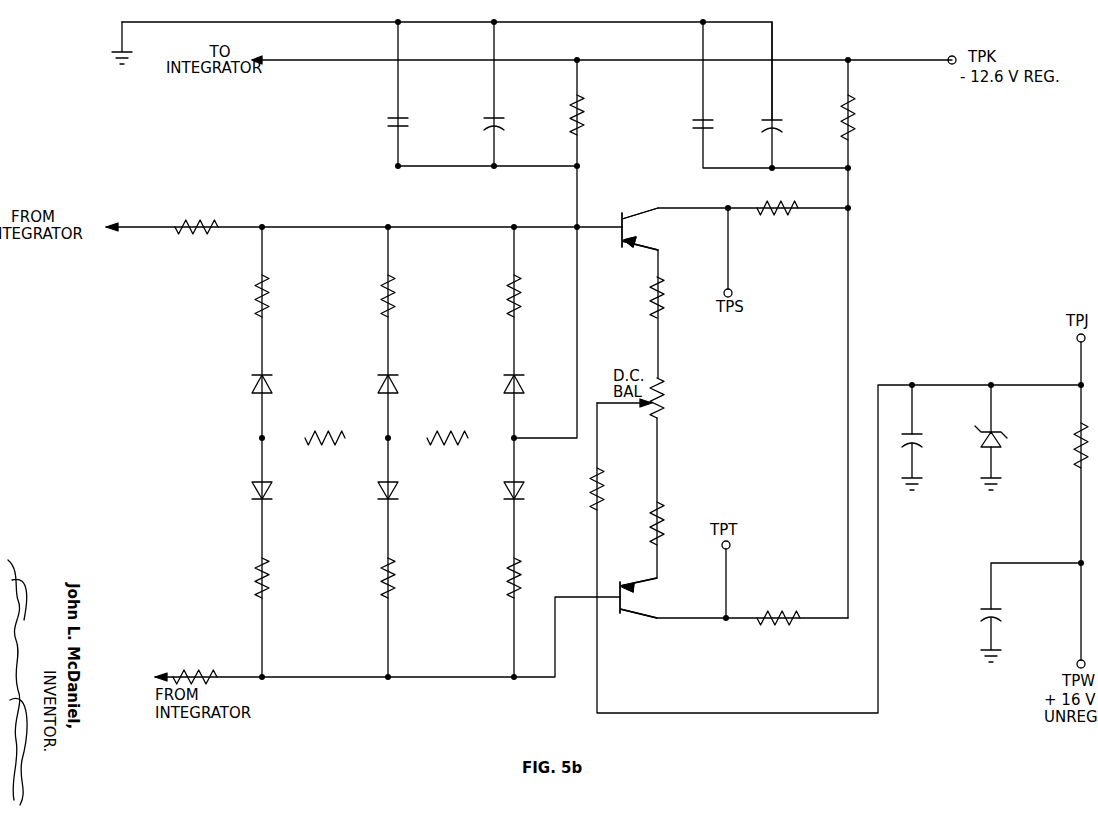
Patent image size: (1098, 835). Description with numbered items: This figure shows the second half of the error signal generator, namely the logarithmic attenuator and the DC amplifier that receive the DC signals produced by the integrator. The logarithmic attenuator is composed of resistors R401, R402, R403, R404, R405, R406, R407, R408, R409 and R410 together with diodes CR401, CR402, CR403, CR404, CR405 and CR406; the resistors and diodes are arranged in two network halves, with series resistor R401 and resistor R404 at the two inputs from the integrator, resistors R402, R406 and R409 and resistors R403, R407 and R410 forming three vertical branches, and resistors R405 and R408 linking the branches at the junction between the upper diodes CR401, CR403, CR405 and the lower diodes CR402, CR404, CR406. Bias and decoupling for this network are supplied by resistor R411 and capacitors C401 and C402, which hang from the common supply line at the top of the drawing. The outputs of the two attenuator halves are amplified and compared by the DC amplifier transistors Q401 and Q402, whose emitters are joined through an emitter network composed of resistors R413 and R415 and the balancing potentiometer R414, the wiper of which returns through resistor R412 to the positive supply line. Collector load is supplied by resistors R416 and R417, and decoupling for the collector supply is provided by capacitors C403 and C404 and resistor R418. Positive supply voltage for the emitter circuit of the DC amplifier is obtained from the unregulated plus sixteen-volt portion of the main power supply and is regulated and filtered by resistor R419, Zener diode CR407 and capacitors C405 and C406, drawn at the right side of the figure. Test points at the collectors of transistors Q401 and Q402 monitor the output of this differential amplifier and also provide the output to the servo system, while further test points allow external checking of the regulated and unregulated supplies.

The capacitor C401 is at (392, 120).
The capacitor C402 is at (489, 120).
The capacitor C403 is at (697, 125).
The capacitor C404 is at (778, 126).
The capacitor C405 is at (916, 437).
The capacitor C406 is at (982, 615).
The resistor R401 is at (208, 232).
The resistor R402 is at (271, 287).
The resistor R403 is at (268, 570).
The resistor R404 is at (211, 668).
The resistor R405 is at (345, 418).
The resistor R406 is at (397, 287).
The resistor R407 is at (396, 570).
The resistor R408 is at (430, 432).
The resistor R409 is at (508, 281).
The resistor R410 is at (522, 570).
The resistor R411 is at (584, 108).
The resistor R412 is at (591, 487).
The resistor R413 is at (650, 298).
The balancing potentiometer R414 is at (665, 392).
The resistor R415 is at (665, 505).
The resistor R416 is at (780, 201).
The resistor R417 is at (775, 626).
The resistor R418 is at (857, 109).
The resistor R419 is at (1073, 458).
The diode CR401 is at (253, 381).
The diode CR402 is at (250, 490).
The diode CR403 is at (380, 382).
The diode CR404 is at (378, 490).
The diode CR405 is at (507, 382).
The diode CR406 is at (503, 490).
The Zener diode CR407 is at (998, 436).
The DC amplifier transistor Q401 is at (630, 229).
The DC amplifier transistor Q402 is at (628, 598).